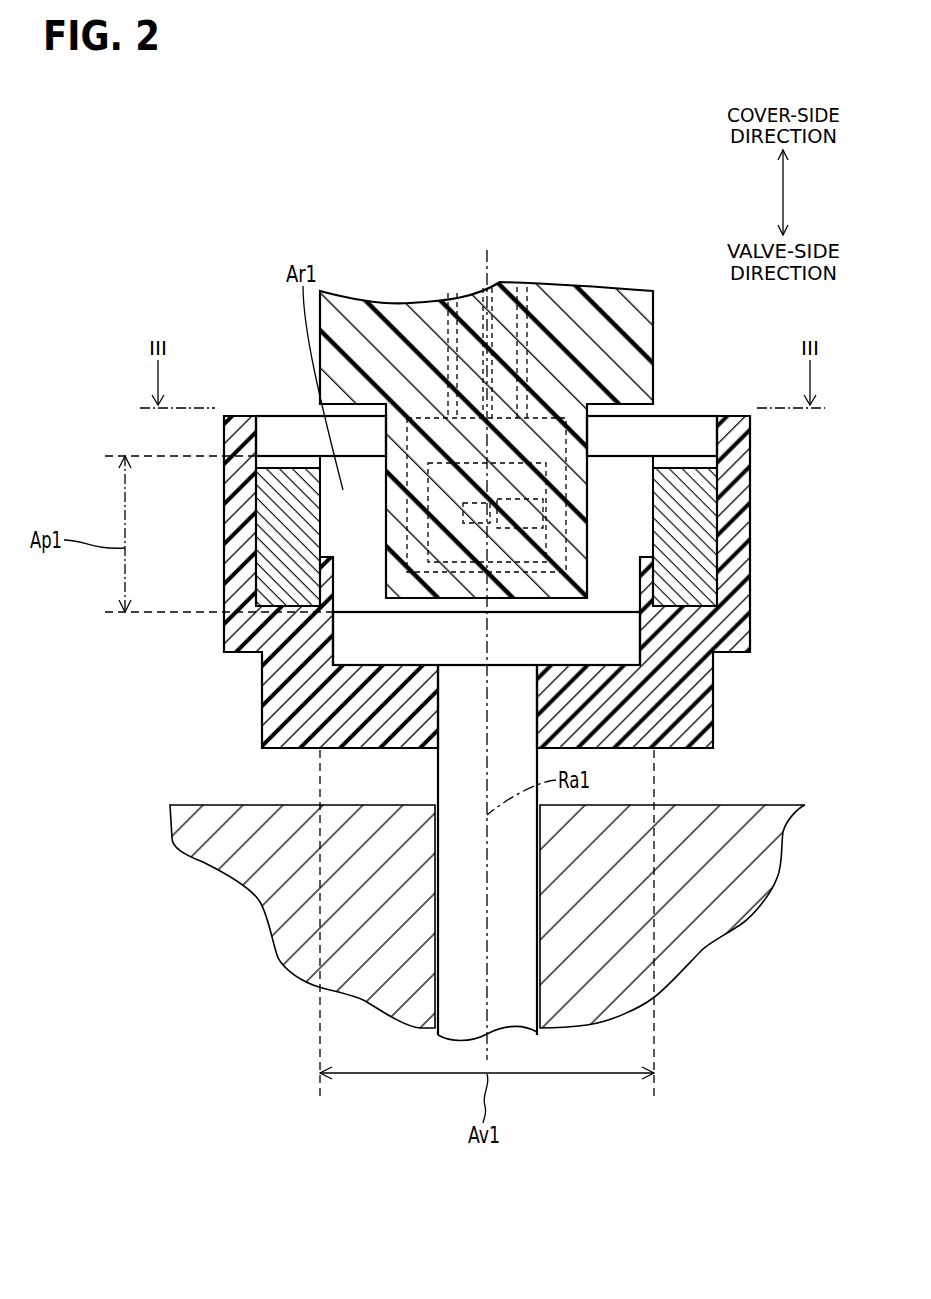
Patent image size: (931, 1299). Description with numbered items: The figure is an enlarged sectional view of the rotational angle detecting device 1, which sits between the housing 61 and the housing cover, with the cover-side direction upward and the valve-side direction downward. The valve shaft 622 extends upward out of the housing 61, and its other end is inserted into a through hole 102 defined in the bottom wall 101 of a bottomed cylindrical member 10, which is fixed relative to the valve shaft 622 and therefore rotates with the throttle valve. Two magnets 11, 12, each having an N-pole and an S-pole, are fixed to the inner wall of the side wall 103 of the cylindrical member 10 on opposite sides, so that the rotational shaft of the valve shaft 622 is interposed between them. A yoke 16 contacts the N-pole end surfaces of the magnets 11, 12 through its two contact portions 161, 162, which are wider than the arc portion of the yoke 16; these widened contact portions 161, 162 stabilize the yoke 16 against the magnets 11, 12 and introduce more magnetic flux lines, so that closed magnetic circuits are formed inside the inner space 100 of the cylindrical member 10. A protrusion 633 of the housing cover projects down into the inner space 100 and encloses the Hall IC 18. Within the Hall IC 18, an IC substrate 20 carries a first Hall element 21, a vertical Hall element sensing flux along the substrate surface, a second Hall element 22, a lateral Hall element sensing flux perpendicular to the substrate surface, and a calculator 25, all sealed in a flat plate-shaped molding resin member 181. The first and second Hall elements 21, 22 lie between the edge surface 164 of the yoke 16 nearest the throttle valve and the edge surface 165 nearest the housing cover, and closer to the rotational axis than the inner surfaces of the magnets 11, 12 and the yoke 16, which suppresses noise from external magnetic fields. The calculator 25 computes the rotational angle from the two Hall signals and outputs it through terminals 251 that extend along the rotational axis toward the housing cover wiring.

The rotational angle detecting device 1 is at (247, 298).
The cylindrical member 10 is at (255, 690).
The inner space 100 is at (300, 438).
The bottom wall 101 is at (305, 735).
The through hole 102 is at (540, 708).
The side wall 103 is at (240, 563).
The magnet 11 is at (278, 517).
The magnet 12 is at (692, 512).
The yoke 16 is at (675, 450).
The contact portion 161 is at (287, 463).
The contact portion 162 is at (703, 462).
The edge surface 164 is at (445, 617).
The edge surface 165 is at (326, 453).
The Hall IC 18 is at (423, 412).
The molding resin member 181 is at (529, 406).
The IC substrate 20 is at (567, 492).
The first Hall element 21 is at (463, 518).
The second Hall element 22 is at (490, 523).
The calculator 25 is at (545, 517).
The terminals 251 is at (448, 300).
The housing 61 is at (230, 838).
The valve shaft 622 is at (460, 782).
The protrusion 633 is at (614, 352).